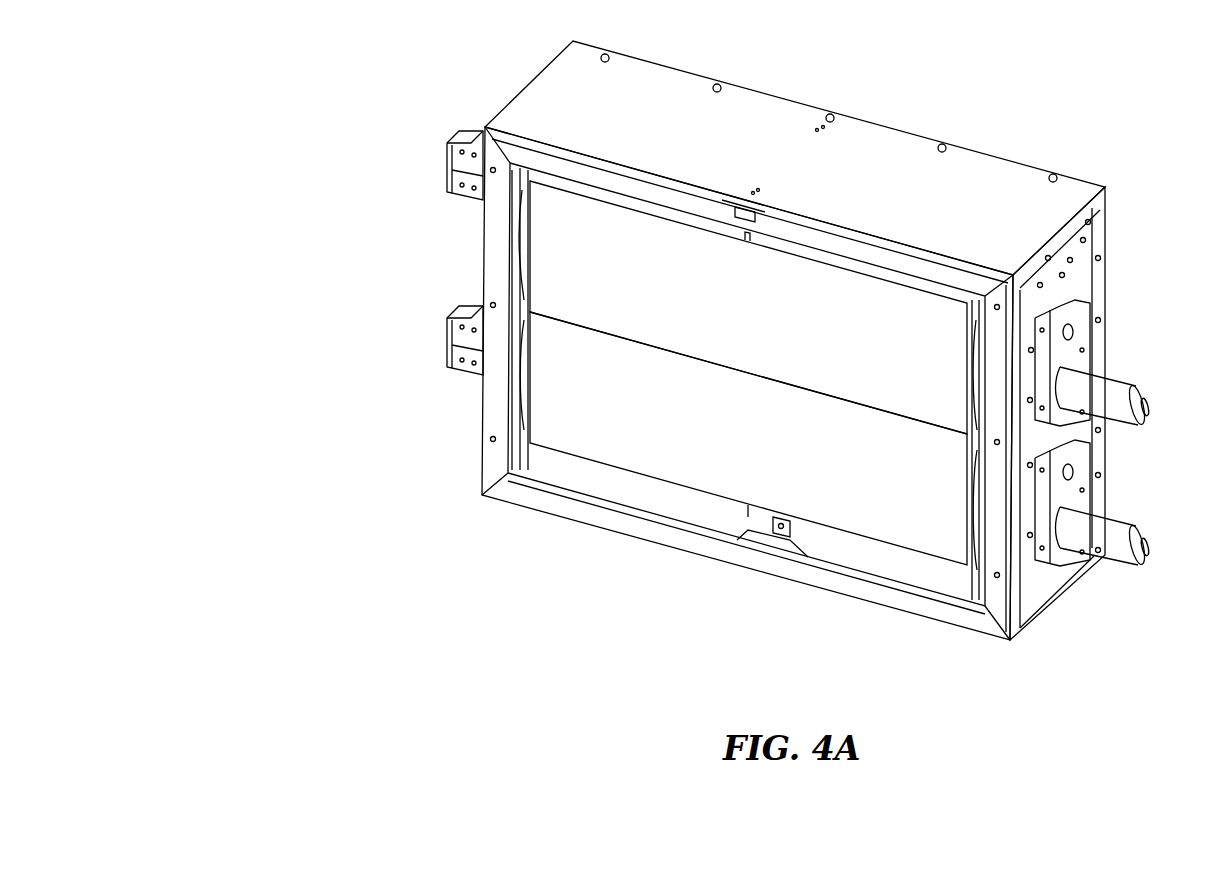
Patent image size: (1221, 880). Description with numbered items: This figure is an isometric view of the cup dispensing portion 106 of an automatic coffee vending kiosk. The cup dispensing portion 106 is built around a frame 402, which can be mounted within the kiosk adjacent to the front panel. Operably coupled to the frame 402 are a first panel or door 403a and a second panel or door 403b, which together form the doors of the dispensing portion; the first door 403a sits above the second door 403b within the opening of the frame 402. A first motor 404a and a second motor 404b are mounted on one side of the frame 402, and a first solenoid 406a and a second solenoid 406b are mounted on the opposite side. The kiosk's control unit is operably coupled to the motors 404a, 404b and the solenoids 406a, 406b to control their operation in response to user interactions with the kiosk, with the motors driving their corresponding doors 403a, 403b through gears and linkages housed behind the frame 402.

The cup dispensing portion 106 is at (352, 227).
The frame 402 is at (842, 176).
The first panel or door 403a is at (725, 331).
The second panel or door 403b is at (722, 451).
The first motor 404a is at (1107, 380).
The second motor 404b is at (1107, 519).
The first solenoid 406a is at (447, 172).
The second solenoid 406b is at (447, 347).